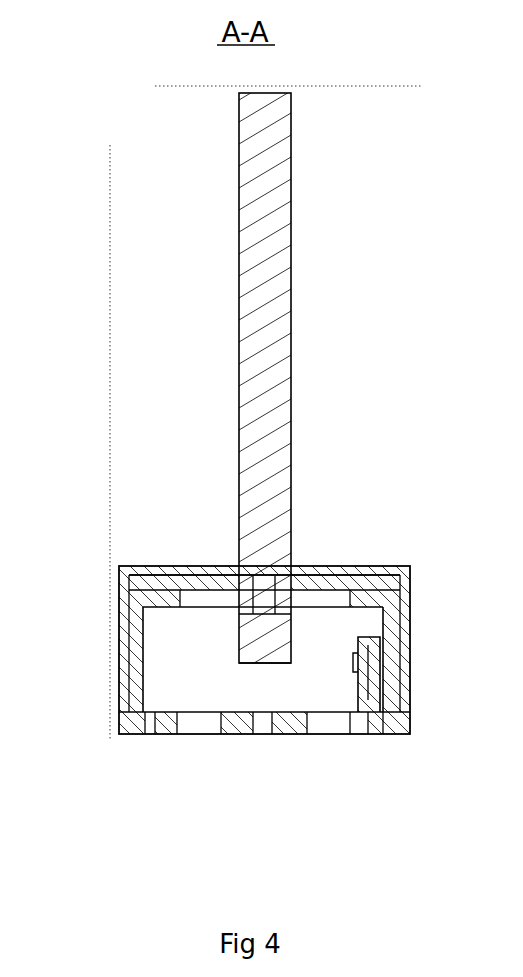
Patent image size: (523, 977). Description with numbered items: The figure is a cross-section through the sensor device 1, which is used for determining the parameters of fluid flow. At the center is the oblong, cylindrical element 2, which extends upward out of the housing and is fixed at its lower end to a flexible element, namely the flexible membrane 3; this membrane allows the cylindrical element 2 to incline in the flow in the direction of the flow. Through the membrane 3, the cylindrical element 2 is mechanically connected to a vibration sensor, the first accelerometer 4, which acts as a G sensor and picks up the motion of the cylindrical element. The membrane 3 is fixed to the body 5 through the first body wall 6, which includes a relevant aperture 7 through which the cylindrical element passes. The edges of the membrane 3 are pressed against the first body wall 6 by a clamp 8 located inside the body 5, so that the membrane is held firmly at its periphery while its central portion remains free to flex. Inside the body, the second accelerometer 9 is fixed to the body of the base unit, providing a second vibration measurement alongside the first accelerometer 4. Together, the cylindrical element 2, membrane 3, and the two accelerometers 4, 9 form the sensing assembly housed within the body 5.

The sensor device 1 is at (203, 148).
The cylindrical element 2 is at (276, 459).
The flexible membrane 3 is at (218, 583).
The first accelerometer 4 is at (245, 650).
The body 5 is at (125, 643).
The first body wall 6 is at (366, 568).
The aperture 7 is at (300, 568).
The clamp 8 is at (401, 684).
The second accelerometer 9 is at (363, 665).